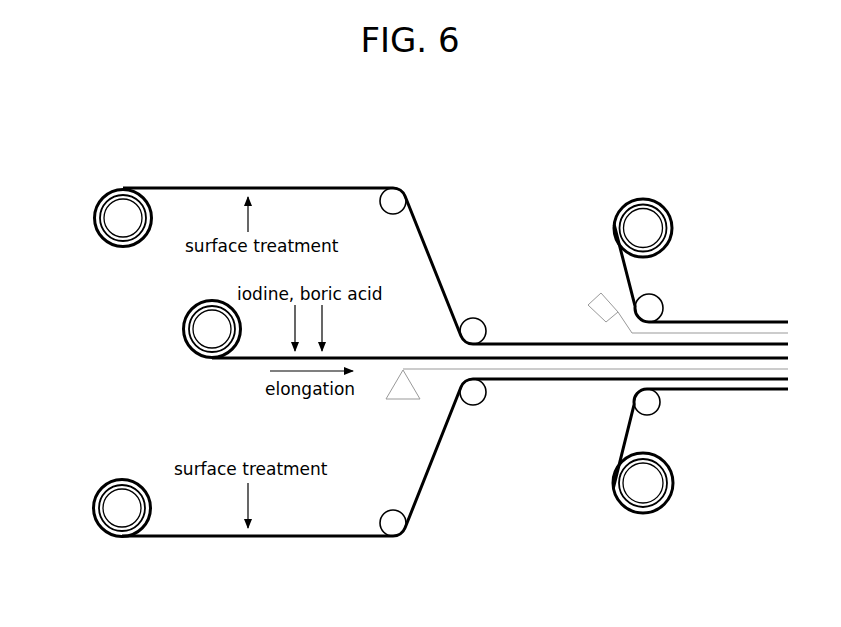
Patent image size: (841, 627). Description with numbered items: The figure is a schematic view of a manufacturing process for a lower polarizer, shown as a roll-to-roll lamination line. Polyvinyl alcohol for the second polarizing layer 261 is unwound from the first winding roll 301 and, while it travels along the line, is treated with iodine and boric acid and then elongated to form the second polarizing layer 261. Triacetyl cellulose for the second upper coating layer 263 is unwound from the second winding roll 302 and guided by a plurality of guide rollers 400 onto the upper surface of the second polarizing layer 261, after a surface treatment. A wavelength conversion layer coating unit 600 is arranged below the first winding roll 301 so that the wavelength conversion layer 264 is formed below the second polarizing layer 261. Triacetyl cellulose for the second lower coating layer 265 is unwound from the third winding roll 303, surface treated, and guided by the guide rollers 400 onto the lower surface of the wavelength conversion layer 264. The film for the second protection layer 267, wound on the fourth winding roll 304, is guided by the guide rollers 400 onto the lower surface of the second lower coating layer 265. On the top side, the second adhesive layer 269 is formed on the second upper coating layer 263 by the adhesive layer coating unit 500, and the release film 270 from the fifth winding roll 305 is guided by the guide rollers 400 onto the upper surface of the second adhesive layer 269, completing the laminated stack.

The second polarizing layer 261 is at (398, 357).
The second upper coating layer 263 is at (305, 186).
The wavelength conversion layer 264 is at (557, 380).
The second lower coating layer 265 is at (324, 535).
The second protection layer 267 is at (712, 390).
The second adhesive layer 269 is at (747, 333).
The release film 270 is at (730, 320).
The first winding roll 301 is at (208, 326).
The second winding roll 302 is at (118, 218).
The third winding roll 303 is at (118, 504).
The fourth winding roll 304 is at (644, 487).
The fifth winding roll 305 is at (632, 226).
The guide rollers 400 is at (396, 199).
The adhesive layer coating unit 500 is at (588, 290).
The wavelength conversion layer coating unit 600 is at (403, 400).